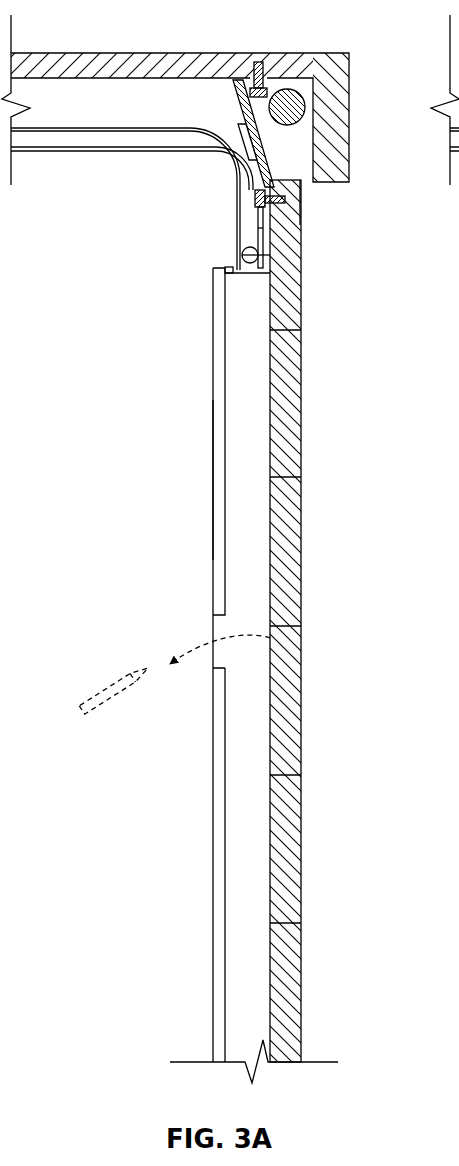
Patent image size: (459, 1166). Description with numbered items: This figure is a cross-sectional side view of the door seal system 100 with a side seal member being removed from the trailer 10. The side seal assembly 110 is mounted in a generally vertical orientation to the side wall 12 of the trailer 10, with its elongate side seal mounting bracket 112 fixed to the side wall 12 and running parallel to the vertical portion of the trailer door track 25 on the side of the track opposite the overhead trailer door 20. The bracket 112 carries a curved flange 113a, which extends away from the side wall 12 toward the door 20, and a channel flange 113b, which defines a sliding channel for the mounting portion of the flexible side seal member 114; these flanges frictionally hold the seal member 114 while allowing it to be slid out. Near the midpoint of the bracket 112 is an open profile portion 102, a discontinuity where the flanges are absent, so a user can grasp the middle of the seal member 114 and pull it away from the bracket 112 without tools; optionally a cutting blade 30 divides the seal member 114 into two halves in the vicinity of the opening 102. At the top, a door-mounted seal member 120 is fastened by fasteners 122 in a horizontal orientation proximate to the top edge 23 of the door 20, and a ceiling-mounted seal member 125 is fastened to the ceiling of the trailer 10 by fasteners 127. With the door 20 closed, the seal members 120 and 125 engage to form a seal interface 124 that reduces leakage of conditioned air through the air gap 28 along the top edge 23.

The trailer 10 is at (160, 52).
The side wall 12 is at (111, 405).
The overhead trailer door 20 is at (296, 457).
The top edge of the trailer door 23 is at (305, 211).
The trailer door track 25 is at (143, 152).
The air gap 28 is at (304, 182).
The cutting blade 30 is at (105, 687).
The door seal system 100 is at (259, 99).
The open profile portion 102 is at (212, 629).
The side seal assembly 110 is at (210, 476).
The side seal mounting bracket 112 is at (217, 295).
The curved flange 113a is at (222, 384).
The channel flange 113b is at (228, 265).
The side seal member 114 is at (242, 343).
The door-mounted seal member 120 is at (239, 125).
The fastener 122 is at (254, 197).
The seal interface 124 is at (266, 149).
The ceiling-mounted seal member 125 is at (240, 108).
The fastener 127 is at (257, 66).